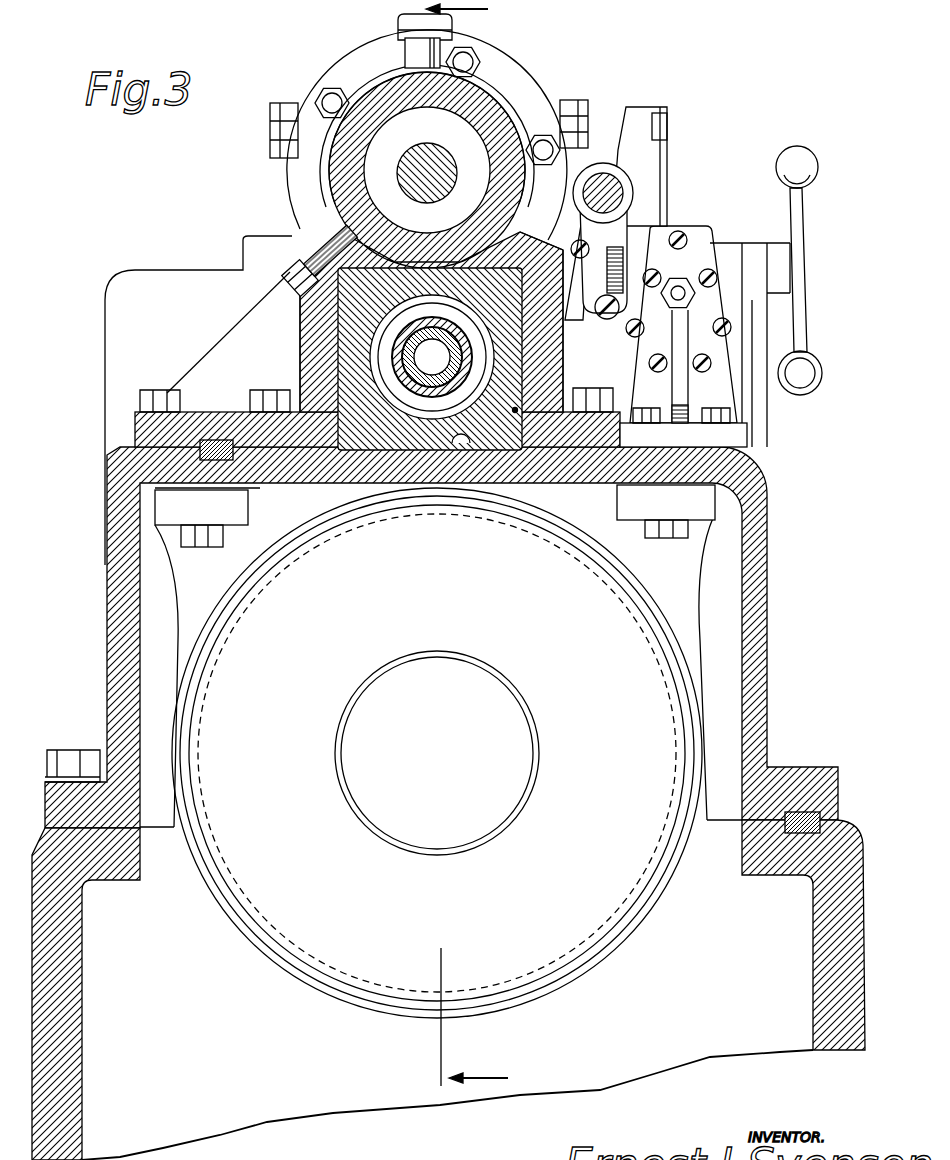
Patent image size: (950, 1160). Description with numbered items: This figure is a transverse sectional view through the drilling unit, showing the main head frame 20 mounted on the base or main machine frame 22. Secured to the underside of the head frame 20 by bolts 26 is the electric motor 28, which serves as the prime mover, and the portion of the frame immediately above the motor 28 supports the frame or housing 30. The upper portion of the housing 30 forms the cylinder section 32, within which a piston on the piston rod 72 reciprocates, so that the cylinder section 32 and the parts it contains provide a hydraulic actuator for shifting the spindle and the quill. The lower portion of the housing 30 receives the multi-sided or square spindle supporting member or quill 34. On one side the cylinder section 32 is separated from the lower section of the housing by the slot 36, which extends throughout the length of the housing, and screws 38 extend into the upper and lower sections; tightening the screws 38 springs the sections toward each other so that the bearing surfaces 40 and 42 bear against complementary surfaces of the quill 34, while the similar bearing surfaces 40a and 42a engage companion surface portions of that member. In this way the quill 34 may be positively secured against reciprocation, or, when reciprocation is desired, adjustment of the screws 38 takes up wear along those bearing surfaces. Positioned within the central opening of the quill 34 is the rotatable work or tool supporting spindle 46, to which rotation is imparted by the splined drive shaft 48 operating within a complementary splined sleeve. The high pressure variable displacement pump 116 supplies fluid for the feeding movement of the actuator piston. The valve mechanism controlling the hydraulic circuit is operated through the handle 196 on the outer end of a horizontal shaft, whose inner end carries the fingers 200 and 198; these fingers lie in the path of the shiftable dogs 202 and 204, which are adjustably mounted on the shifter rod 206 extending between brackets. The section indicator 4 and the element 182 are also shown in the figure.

The section line 4- 4 is at (478, 549).
The main head frame 20 is at (768, 618).
The base or main machine frame 22 is at (68, 957).
The bolts 26 is at (183, 541).
The electric motor 28 is at (618, 950).
The frame or housing 30 is at (518, 95).
The cylinder section 32 is at (465, 97).
The spindle supporting member or quill 34 is at (430, 423).
The slot 36 is at (298, 247).
The screws 38 is at (282, 290).
The bearing surface 40 is at (424, 221).
The bearing surface 42 is at (352, 346).
The spindle 46 is at (378, 343).
The splined drive shaft 48 is at (421, 385).
The bearing surface 42a is at (463, 437).
The bearing surface 40a is at (512, 372).
The piston rod 72 is at (422, 203).
The high pressure variable displacement pump 116 is at (340, 59).
The clamp block 182 is at (407, 44).
The operating handle 196 is at (802, 157).
The finger 198 is at (665, 250).
The finger 200 is at (567, 312).
The shiftable dog 202 is at (650, 238).
The shiftable dog 204 is at (612, 223).
The shifter rod 206 is at (618, 187).